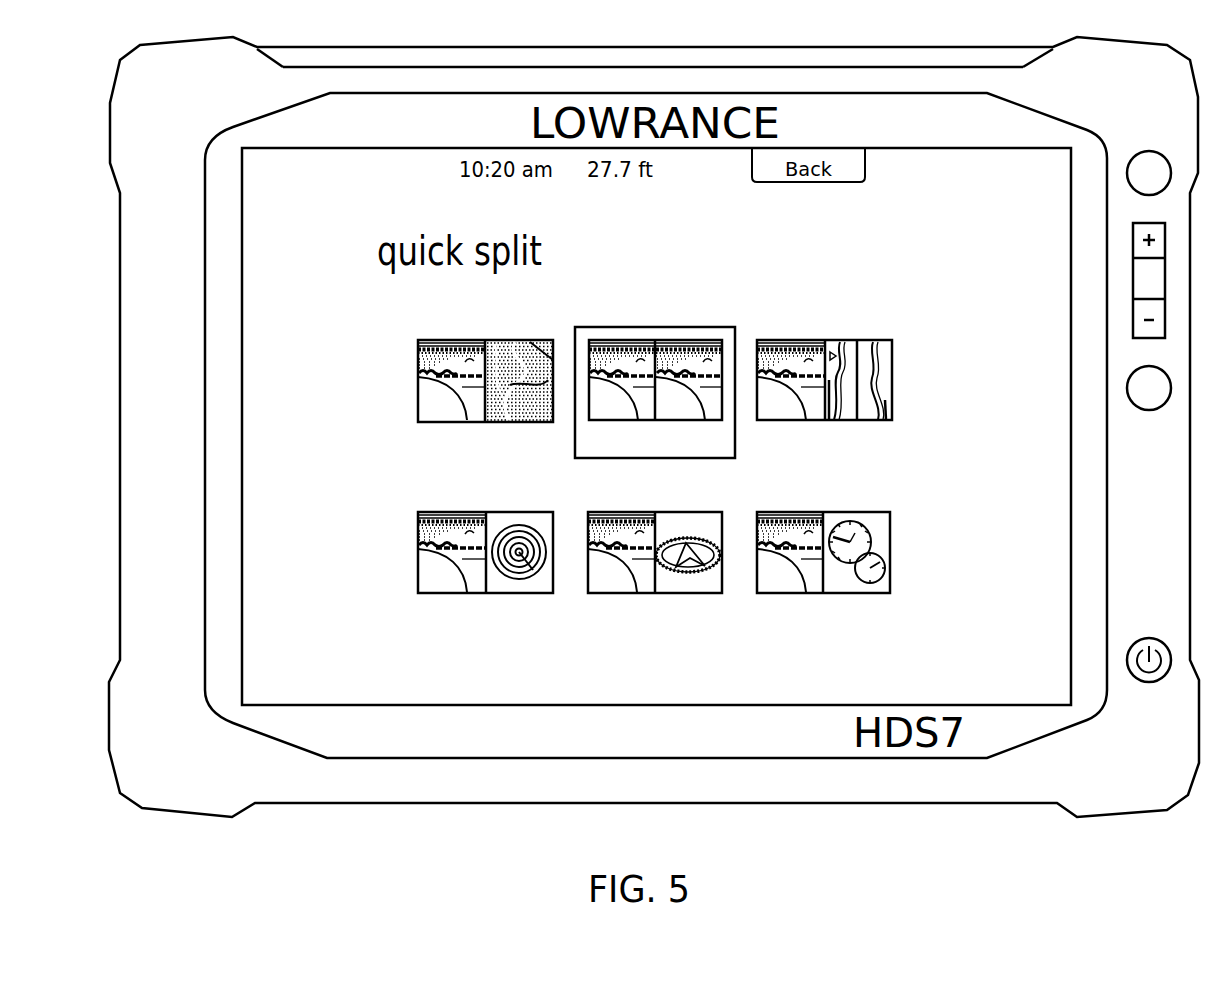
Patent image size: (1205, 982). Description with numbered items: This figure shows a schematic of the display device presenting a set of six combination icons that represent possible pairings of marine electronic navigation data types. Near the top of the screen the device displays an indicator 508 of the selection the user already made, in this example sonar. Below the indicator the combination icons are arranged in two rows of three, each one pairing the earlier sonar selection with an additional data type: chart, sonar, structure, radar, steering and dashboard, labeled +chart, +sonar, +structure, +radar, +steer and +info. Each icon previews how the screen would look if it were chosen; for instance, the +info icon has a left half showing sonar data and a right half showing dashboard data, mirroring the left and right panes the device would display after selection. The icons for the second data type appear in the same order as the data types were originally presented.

The indicator 508 is at (630, 235).